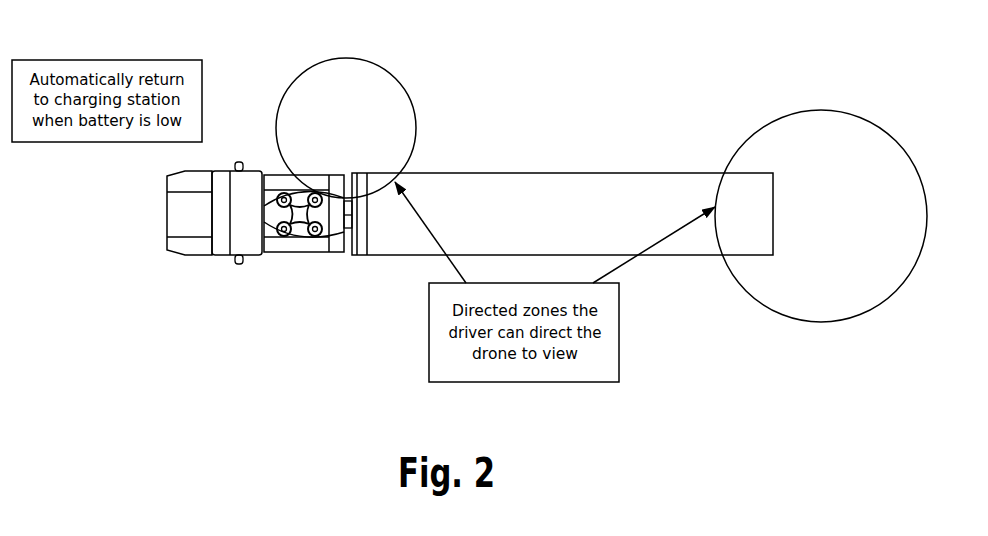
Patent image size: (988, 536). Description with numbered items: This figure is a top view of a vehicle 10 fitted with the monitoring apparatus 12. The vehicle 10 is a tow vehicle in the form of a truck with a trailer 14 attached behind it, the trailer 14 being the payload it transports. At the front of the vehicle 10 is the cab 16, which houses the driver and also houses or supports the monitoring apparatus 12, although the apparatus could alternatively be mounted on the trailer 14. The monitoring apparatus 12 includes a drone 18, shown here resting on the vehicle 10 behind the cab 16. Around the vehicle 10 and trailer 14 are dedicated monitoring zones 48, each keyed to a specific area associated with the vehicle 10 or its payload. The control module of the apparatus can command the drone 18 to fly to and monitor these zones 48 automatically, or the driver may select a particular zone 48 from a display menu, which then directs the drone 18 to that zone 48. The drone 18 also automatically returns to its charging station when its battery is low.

The vehicle 10 is at (168, 215).
The monitoring apparatus 12 is at (260, 147).
The trailer 14 is at (668, 255).
The cab 16 is at (312, 252).
The drone 18 is at (303, 236).
The dedicated monitoring zone 48 is at (388, 70).